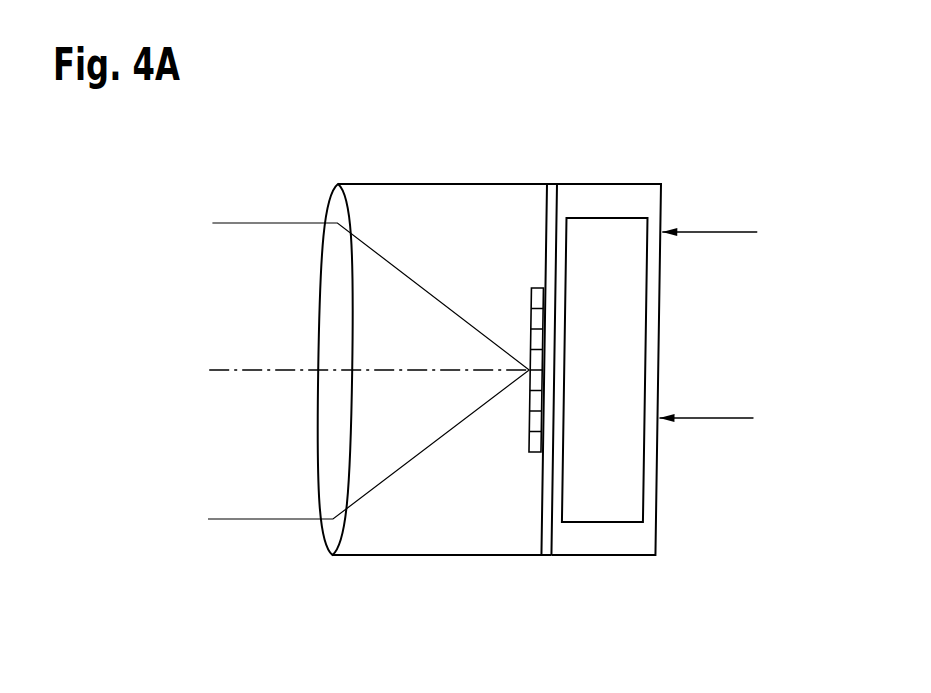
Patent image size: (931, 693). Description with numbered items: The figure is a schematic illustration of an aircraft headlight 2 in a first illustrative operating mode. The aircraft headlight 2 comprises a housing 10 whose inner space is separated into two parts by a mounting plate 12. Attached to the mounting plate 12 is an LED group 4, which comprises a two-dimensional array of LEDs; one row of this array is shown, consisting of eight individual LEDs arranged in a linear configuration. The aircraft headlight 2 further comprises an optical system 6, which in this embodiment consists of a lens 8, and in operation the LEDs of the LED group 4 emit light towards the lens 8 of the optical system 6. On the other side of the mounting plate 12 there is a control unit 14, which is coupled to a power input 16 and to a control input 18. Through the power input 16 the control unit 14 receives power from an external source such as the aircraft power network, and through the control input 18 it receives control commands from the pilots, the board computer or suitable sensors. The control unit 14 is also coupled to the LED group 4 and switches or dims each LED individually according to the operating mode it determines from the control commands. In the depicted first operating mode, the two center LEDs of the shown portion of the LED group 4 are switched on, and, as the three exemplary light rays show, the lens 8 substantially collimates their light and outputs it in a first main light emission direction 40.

The aircraft headlight 2 is at (287, 177).
The LED group 4 is at (532, 441).
The optical system 6 is at (295, 441).
The lens 8 is at (330, 268).
The housing 10 is at (648, 184).
The mounting plate 12 is at (552, 184).
The control unit 14 is at (602, 218).
The power input 16 is at (716, 418).
The control input 18 is at (719, 232).
The first main light emission direction 40 is at (241, 370).